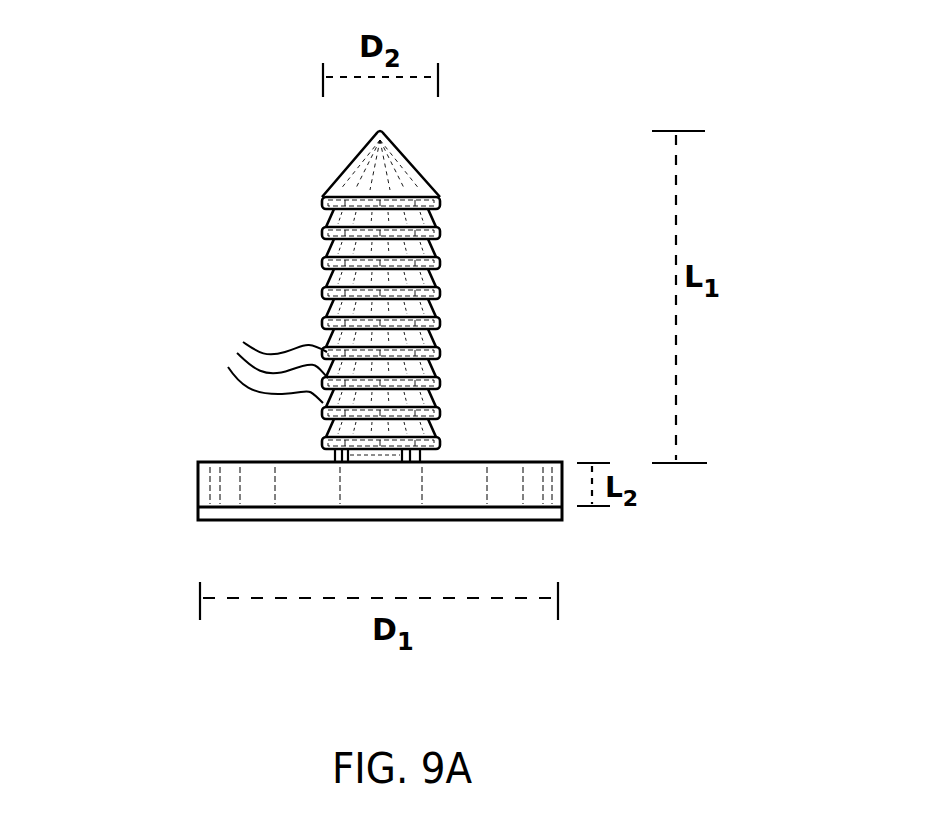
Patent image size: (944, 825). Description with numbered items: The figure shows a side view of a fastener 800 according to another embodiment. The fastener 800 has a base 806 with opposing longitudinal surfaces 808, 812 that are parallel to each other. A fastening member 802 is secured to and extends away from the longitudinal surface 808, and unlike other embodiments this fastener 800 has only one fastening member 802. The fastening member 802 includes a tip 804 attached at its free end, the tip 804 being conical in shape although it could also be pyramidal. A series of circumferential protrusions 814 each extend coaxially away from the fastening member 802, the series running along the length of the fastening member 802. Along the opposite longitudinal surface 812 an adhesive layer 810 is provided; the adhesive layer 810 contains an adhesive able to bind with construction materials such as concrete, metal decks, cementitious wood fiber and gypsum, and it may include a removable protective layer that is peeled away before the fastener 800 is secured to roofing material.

The fastener 800 is at (494, 143).
The fastening member 802 is at (446, 255).
The tip 804 is at (348, 170).
The base 806 is at (552, 462).
The longitudinal surface 808 is at (474, 447).
The adhesive layer 810 is at (518, 520).
The longitudinal surface 812 is at (233, 535).
The circumferential protrusions 814 is at (252, 365).